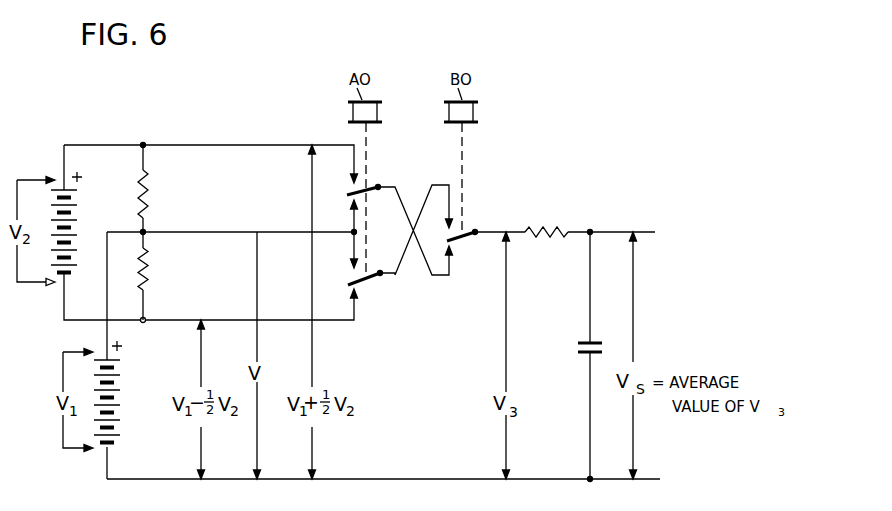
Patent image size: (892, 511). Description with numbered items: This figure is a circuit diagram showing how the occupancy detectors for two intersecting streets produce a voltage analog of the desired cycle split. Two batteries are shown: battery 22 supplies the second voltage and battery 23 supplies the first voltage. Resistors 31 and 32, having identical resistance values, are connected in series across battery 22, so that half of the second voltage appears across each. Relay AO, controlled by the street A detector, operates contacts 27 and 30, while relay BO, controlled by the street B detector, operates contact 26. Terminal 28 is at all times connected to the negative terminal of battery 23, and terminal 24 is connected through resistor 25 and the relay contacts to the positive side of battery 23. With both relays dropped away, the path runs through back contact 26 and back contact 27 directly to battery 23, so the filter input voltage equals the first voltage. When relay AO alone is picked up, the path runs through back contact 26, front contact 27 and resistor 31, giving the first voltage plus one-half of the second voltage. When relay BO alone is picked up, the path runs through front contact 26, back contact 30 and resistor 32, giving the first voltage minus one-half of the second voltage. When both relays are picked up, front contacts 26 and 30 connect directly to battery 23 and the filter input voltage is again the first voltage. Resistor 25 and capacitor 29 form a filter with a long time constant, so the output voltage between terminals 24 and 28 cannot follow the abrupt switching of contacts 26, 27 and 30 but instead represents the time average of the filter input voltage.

The battery 22 is at (74, 210).
The battery 23 is at (116, 380).
The terminal 24 is at (642, 232).
The resistor 25 is at (558, 219).
The contact of relay BO 26 is at (467, 235).
The contact of relay AO 27 is at (370, 193).
The terminal 28 is at (640, 480).
The capacitor 29 is at (585, 353).
The contact of relay AO 30 is at (372, 278).
The resistor 31 is at (156, 190).
The resistor 32 is at (156, 264).